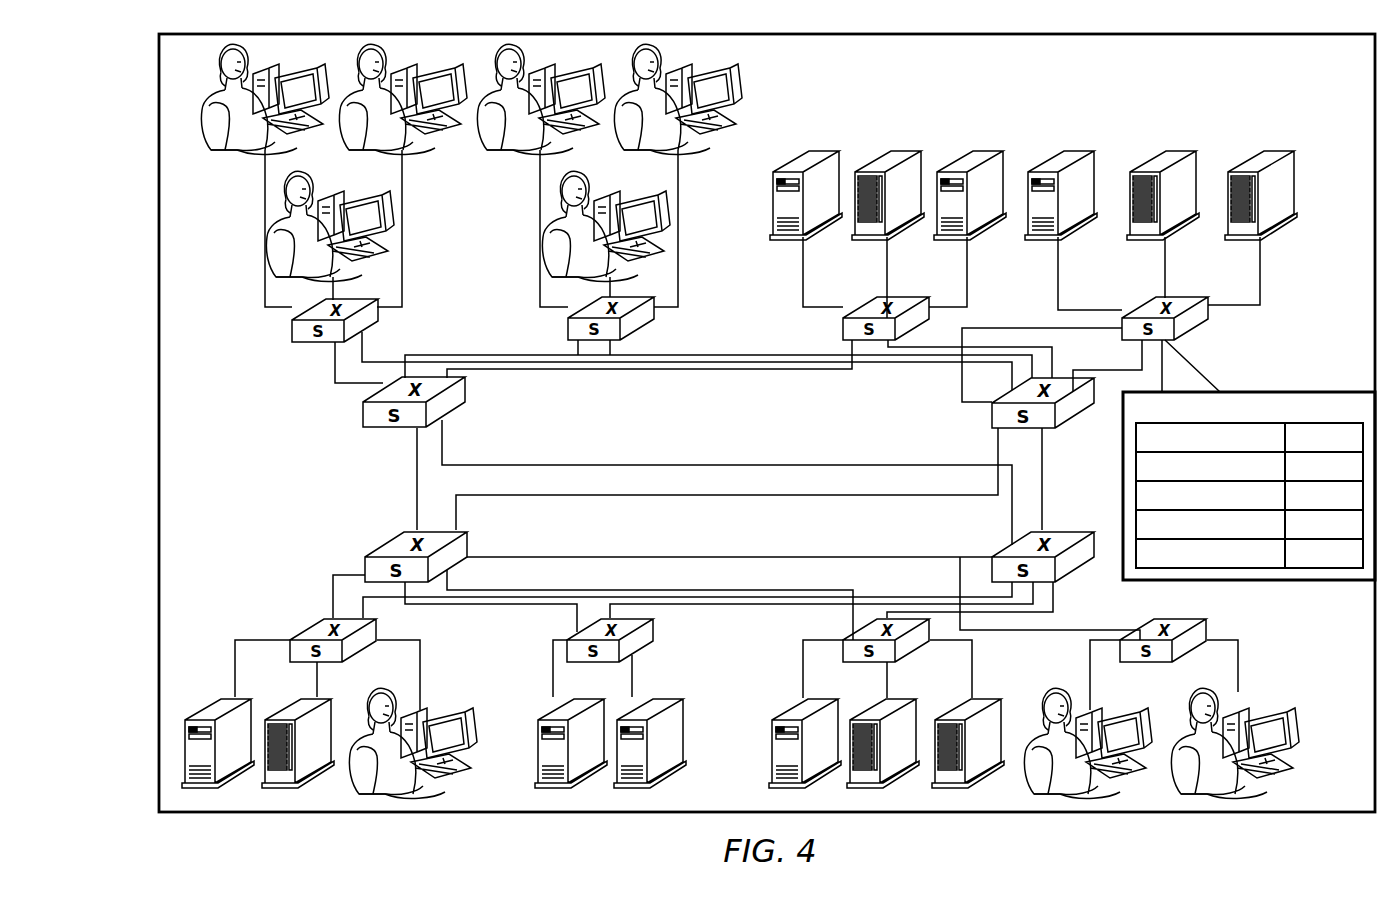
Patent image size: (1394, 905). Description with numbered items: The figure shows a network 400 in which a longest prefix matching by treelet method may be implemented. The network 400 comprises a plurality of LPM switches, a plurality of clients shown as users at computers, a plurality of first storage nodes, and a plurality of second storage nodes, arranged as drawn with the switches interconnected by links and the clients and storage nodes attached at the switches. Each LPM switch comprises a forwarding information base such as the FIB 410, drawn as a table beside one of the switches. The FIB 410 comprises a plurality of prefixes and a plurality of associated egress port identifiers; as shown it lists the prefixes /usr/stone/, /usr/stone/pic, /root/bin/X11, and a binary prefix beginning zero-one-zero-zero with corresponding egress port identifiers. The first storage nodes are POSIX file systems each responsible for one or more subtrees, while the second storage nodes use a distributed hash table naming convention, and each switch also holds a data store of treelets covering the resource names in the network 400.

The network 400 is at (243, 27).
The forwarding information base (FIB) 410 is at (1305, 392).